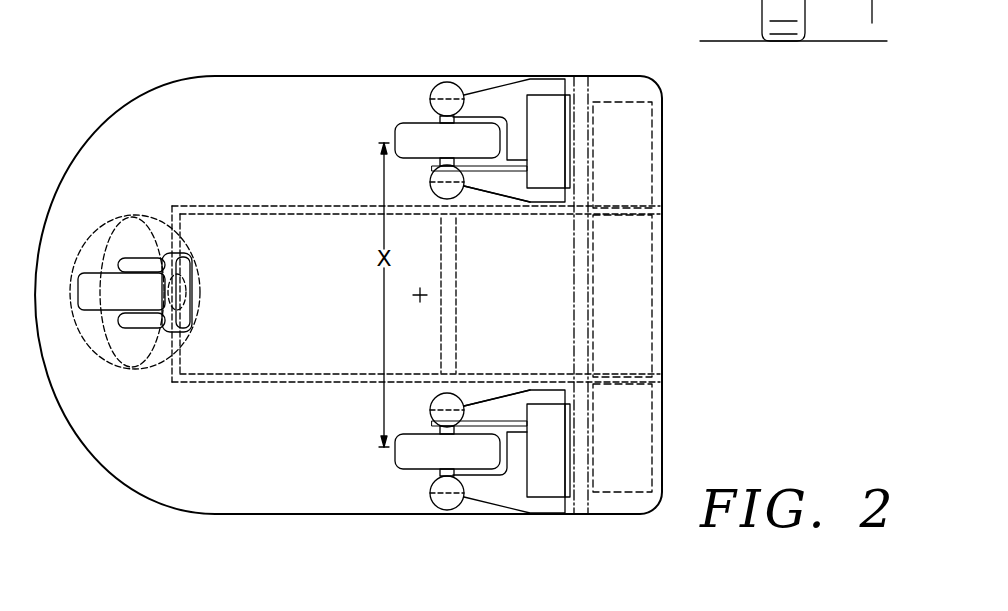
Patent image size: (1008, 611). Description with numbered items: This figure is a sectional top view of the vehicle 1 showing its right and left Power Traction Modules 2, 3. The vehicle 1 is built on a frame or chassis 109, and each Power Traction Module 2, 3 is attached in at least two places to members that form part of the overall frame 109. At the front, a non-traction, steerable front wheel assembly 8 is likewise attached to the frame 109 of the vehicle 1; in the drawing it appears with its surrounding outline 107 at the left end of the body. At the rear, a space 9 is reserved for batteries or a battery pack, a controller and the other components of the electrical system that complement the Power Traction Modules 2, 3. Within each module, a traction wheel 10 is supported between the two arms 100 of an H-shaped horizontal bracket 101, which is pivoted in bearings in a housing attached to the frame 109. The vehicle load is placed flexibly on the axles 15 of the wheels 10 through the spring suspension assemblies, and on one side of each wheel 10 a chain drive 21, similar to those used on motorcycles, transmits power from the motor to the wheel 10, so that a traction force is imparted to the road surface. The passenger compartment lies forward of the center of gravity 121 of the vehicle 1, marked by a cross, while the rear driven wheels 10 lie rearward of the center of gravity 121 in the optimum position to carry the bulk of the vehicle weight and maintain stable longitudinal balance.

The vehicle 1 is at (243, 72).
The right Power Traction Module 2 is at (574, 108).
The left Power Traction Module 3 is at (575, 490).
The front wheel assembly 8 is at (176, 300).
The space 9 is at (654, 149).
The traction wheel 10 is at (395, 455).
The axle 15 is at (434, 118).
The chain drive 21 is at (520, 172).
The arms 100 is at (497, 94).
The H-shaped horizontal bracket 101 is at (505, 198).
The caster swivel envelope 107 is at (76, 262).
The frame 109 is at (299, 207).
The center of gravity 121 is at (418, 299).